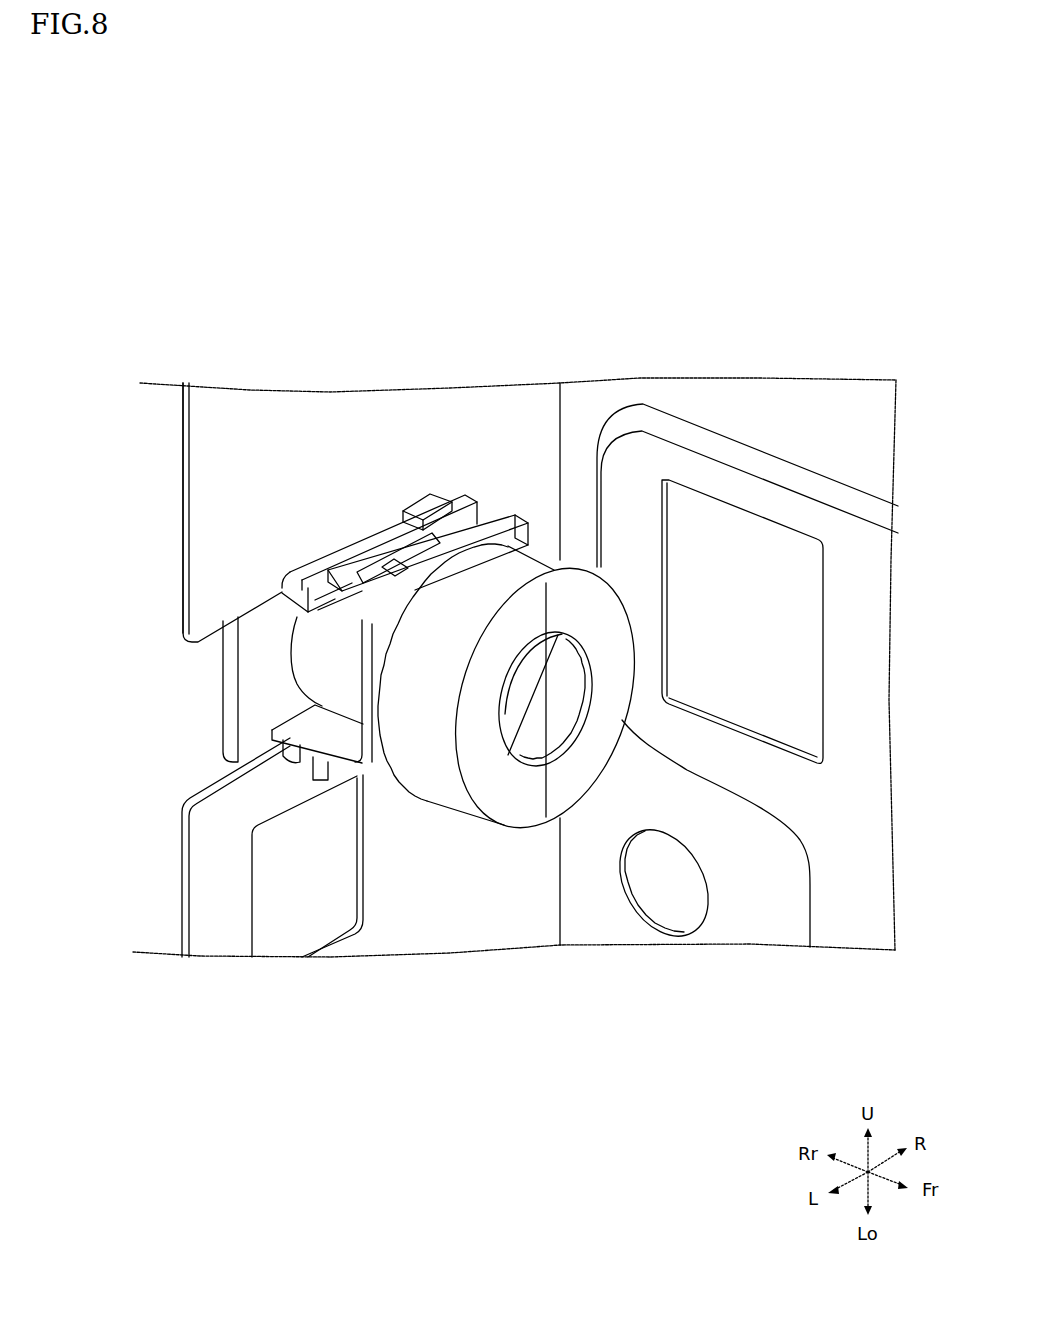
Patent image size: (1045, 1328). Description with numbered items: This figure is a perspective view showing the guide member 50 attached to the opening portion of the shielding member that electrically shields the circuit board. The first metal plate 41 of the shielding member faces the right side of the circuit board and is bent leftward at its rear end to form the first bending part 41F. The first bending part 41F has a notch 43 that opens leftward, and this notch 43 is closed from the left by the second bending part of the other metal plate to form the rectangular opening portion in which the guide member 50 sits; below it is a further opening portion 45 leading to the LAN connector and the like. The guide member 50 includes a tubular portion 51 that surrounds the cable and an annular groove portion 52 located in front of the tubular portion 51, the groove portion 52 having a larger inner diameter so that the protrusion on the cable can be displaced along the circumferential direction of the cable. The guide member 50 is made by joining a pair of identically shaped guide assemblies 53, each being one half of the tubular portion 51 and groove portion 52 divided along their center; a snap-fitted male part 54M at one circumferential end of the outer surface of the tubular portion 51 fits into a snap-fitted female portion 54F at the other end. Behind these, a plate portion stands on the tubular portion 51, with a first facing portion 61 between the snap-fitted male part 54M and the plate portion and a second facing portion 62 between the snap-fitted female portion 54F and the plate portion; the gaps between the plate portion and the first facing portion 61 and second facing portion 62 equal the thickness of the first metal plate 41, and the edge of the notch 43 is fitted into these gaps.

The first metal plate 41 is at (163, 519).
The first bending part 41F is at (183, 597).
The notch 43 is at (208, 785).
The opening portion 45 is at (257, 868).
The guide member 50 is at (617, 858).
The tubular portion 51 is at (320, 655).
The groove portion 52 is at (522, 721).
The guide assembly 53 is at (513, 840).
The snap-fitted female portion 54F is at (353, 555).
The snap-fitted male part 54M is at (392, 562).
The first facing portion 61 is at (313, 553).
The second facing portion 62 is at (420, 497).